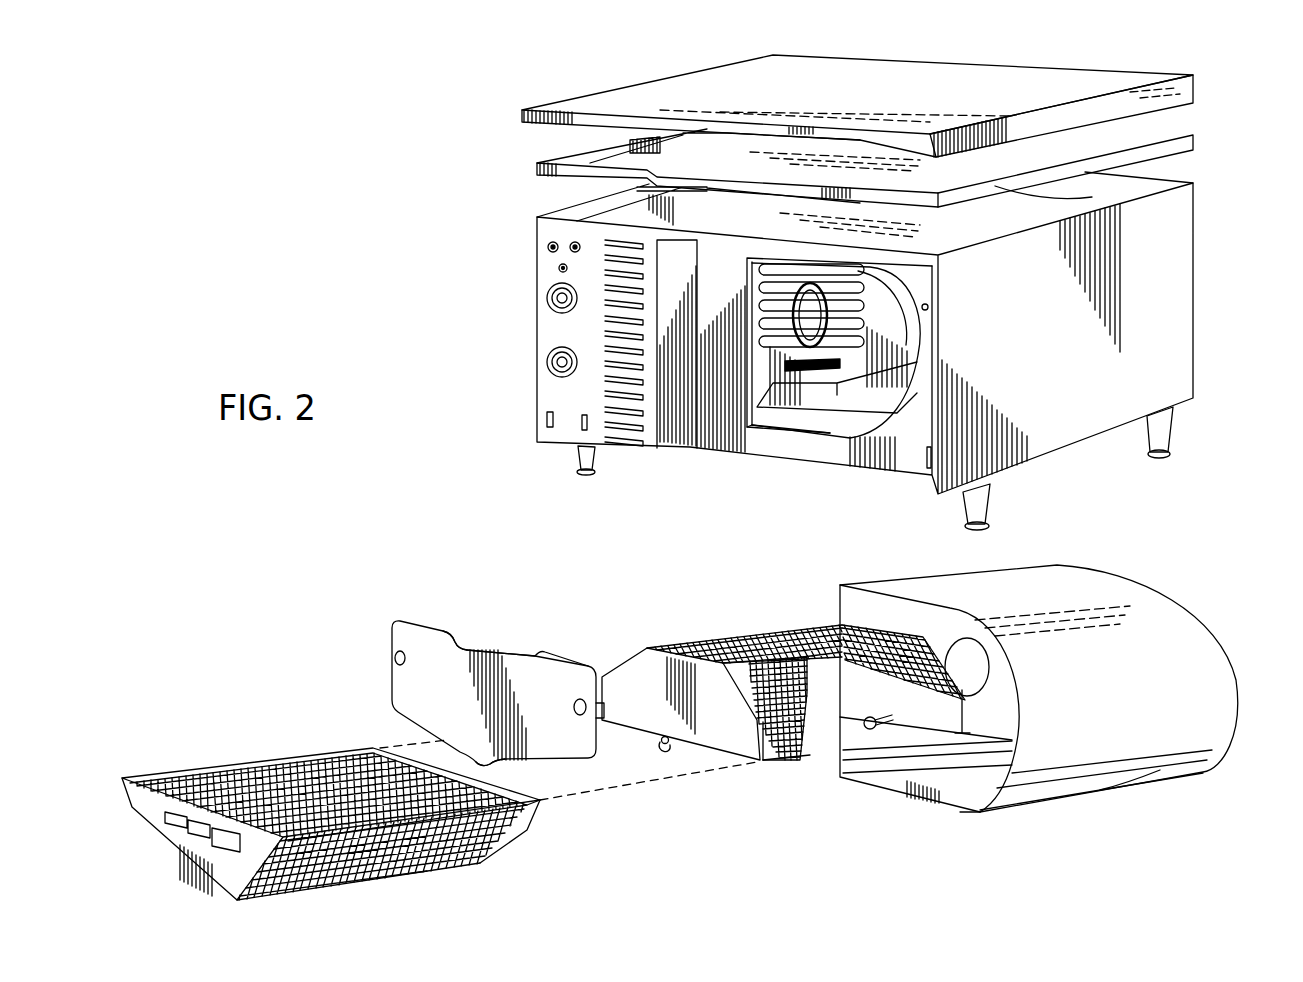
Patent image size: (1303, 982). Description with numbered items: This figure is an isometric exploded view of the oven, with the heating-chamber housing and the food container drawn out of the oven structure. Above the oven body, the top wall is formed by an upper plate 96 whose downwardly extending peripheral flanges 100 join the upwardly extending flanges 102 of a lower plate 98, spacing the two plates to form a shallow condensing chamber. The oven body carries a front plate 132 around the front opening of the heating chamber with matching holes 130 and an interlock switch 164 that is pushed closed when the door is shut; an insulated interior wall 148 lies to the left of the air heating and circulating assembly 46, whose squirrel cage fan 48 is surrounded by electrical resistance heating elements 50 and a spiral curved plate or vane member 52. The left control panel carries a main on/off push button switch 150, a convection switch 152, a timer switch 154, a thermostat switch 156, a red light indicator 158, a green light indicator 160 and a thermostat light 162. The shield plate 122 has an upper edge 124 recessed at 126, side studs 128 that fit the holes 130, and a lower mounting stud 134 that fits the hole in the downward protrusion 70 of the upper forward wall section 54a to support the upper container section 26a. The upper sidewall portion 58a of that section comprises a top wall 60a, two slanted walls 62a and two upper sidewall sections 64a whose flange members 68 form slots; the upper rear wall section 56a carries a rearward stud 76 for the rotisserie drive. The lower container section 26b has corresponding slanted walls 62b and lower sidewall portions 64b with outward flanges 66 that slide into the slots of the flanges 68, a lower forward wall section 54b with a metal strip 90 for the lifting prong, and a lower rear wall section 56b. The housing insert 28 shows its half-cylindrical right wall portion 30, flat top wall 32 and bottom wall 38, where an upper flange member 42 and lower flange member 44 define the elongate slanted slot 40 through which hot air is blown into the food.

The upper plate 96 is at (1133, 77).
The downwardly extending peripheral flanges 100 is at (1177, 98).
The lower plate 98 is at (1113, 145).
The upwardly extending flanges 102 is at (1180, 145).
The holes 130 is at (737, 284).
The interlock switch 164 is at (704, 265).
The interior wall 148 is at (768, 362).
The red light indicator 158 is at (549, 243).
The green light indicator 160 is at (575, 242).
The thermostat light 162 is at (559, 268).
The thermostat switch 156 is at (548, 298).
The timer switch 154 is at (550, 355).
The main on/off push button switch 150 is at (545, 420).
The convection switch 152 is at (583, 430).
The front plate 132 is at (917, 428).
The electrical resistance heating elements 50 is at (853, 323).
The squirrel cage fan 48 is at (853, 362).
The curved plate or vane member 52 is at (752, 426).
The air heating and circulating assembly 46 is at (805, 403).
The shield plate 122 is at (419, 701).
The recess 126 is at (477, 643).
The upper edge 124 is at (557, 657).
The mounting stud 134 is at (505, 765).
The studs 128 is at (603, 718).
The upper container section 26a is at (830, 711).
The upper portion of sidewall 58a is at (677, 640).
The upper sidewall sections 64a is at (767, 762).
The upper forward wall section 54a is at (713, 730).
The slanted walls 62a is at (743, 720).
The top wall 60a is at (828, 630).
The flange member 68 is at (807, 760).
The downward protrusion 70 is at (667, 748).
The upper rear wall section 56a is at (975, 712).
The stud 76 is at (880, 720).
The flat top wall 32 is at (1087, 580).
The lower flange member 44 is at (990, 777).
The upper flange member 42 is at (1003, 743).
The elongate slanted slot 40 is at (895, 775).
The bottom wall 38 is at (917, 803).
The right wall portion 30 is at (1123, 790).
The housing insert 28 is at (967, 806).
The lower container section 26b is at (345, 821).
The flanges 66 is at (155, 778).
The lower forward wall section 54b is at (222, 873).
The metal strip 90 is at (177, 823).
The lower sidewall portions 64b is at (310, 768).
The slanted walls 62b is at (405, 873).
The lower rear wall section 56b is at (528, 797).